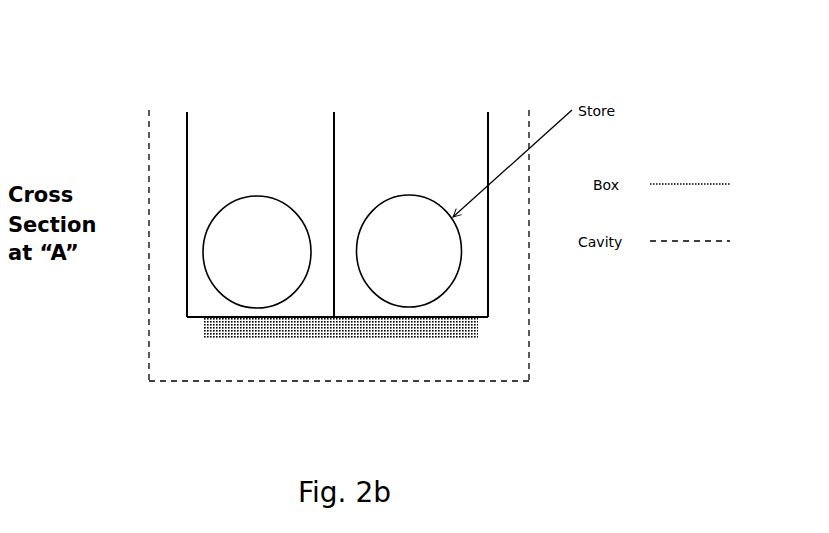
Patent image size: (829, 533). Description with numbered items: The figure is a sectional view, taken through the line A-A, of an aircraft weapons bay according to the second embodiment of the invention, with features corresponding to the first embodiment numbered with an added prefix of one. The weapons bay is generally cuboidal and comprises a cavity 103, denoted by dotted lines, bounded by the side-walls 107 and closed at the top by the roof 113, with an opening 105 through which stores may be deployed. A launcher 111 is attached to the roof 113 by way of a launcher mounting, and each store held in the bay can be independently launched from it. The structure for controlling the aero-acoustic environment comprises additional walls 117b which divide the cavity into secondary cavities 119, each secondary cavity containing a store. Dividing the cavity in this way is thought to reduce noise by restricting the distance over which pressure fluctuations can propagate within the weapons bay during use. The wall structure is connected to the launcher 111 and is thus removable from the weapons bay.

The cavity 103 is at (165, 178).
The opening 105 is at (168, 110).
The side-walls 107 is at (140, 323).
The launcher 111 is at (440, 340).
The roof 113 is at (247, 386).
The longitudinal walls 117b is at (190, 152).
The secondary cavities 119 is at (253, 108).